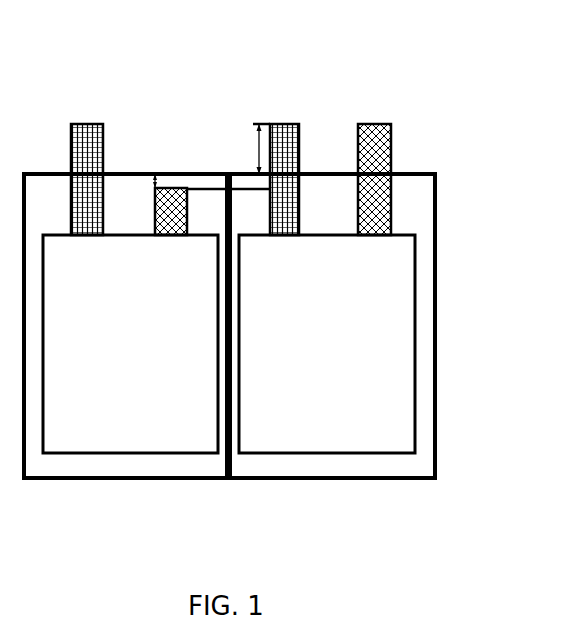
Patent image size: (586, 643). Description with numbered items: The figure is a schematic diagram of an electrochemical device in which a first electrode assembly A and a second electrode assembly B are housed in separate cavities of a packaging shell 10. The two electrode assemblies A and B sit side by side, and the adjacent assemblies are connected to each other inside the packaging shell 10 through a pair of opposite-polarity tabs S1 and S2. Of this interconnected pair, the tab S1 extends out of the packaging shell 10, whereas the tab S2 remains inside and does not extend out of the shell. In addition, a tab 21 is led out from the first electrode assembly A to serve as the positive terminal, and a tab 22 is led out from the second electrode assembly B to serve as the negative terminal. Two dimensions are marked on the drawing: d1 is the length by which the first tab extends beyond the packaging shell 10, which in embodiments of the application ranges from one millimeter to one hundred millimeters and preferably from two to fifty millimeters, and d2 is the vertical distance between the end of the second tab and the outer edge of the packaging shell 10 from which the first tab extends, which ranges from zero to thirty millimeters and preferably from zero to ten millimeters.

The packaging shell 10 is at (415, 198).
The tab 21 is at (85, 135).
The tab 22 is at (373, 130).
The tab S1 is at (285, 130).
The tab S2 is at (172, 190).
The first electrode assembly A is at (133, 429).
The second electrode assembly B is at (330, 427).
The length by which the first tab extends out of the packaging shell d1 is at (245, 149).
The vertical distance between an end of the second tab and an outer edge of the pack d2 is at (141, 186).